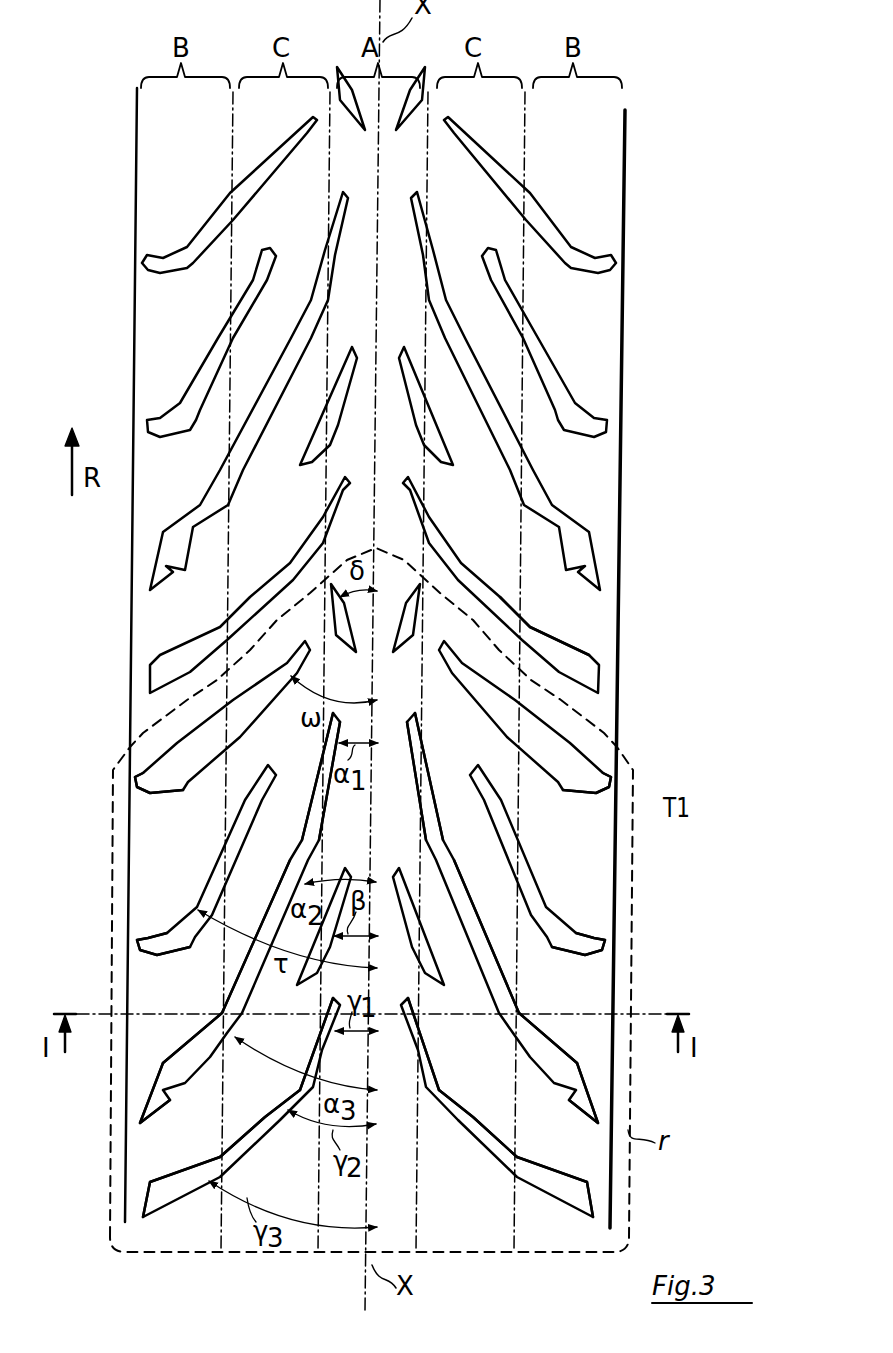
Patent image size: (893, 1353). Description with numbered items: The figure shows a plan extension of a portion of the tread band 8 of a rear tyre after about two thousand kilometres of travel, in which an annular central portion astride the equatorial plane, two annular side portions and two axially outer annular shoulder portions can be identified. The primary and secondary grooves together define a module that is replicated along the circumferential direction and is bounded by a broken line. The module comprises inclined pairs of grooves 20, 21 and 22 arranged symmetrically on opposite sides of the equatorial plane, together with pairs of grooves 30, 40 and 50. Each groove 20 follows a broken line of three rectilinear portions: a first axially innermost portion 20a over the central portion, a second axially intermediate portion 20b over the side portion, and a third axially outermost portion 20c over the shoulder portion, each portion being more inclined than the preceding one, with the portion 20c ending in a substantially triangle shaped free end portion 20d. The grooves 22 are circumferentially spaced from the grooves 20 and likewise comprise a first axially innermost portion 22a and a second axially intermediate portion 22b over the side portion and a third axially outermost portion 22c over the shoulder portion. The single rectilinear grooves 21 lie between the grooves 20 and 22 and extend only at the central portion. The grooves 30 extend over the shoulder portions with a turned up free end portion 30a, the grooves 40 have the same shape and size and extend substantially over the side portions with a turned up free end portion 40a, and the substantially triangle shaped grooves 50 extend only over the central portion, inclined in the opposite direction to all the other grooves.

The tread band 8 is at (593, 646).
The grooves 20 is at (270, 385).
The first axially innermost portion 20a is at (320, 787).
The second axially intermediate portion 20b is at (242, 977).
The third axially outermost portion 20c is at (180, 1058).
The free end portion 20d is at (152, 1088).
The grooves 21 is at (340, 392).
The grooves 22 is at (258, 578).
The first axially innermost portion 22a is at (312, 1048).
The second axially intermediate portion 22b is at (268, 1105).
The third axially outermost portion 22c is at (177, 1172).
The grooves 30 is at (556, 355).
The turned up free end portion 30a is at (166, 930).
The grooves 40 is at (264, 190).
The turned up free end portion 40a is at (167, 780).
The grooves 50 is at (430, 63).